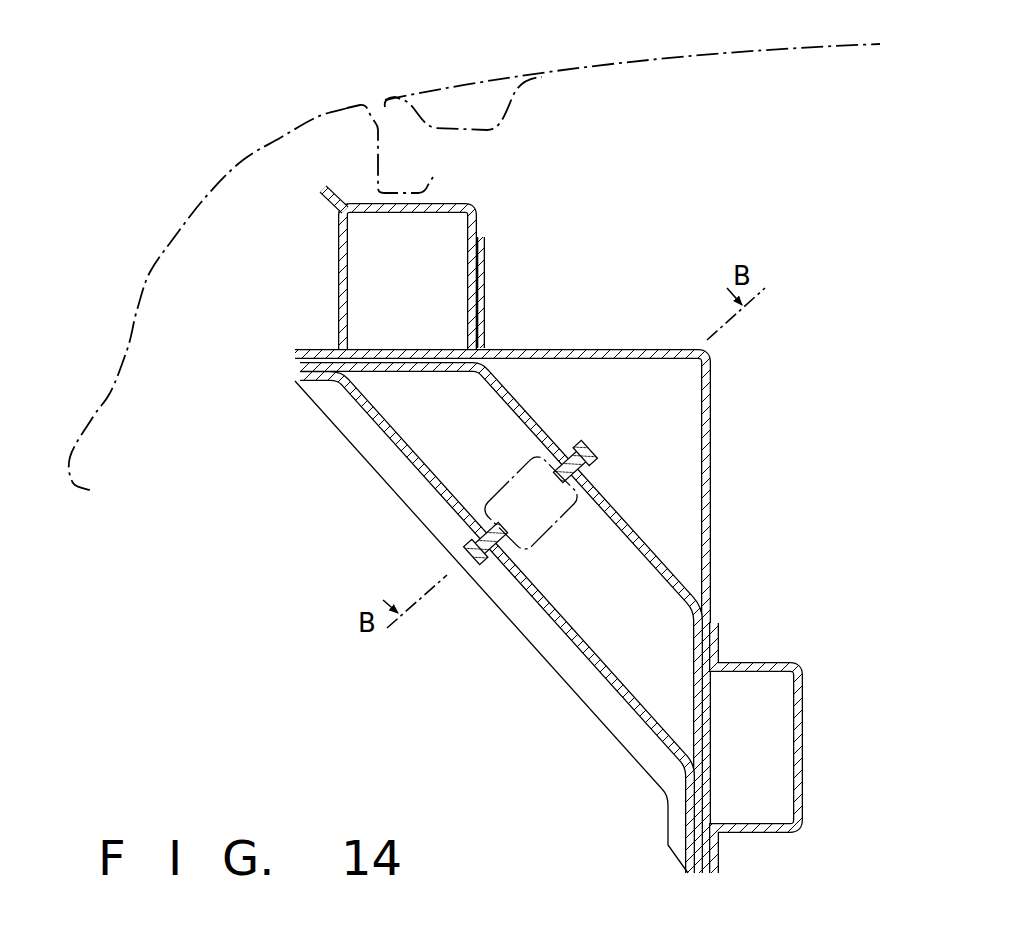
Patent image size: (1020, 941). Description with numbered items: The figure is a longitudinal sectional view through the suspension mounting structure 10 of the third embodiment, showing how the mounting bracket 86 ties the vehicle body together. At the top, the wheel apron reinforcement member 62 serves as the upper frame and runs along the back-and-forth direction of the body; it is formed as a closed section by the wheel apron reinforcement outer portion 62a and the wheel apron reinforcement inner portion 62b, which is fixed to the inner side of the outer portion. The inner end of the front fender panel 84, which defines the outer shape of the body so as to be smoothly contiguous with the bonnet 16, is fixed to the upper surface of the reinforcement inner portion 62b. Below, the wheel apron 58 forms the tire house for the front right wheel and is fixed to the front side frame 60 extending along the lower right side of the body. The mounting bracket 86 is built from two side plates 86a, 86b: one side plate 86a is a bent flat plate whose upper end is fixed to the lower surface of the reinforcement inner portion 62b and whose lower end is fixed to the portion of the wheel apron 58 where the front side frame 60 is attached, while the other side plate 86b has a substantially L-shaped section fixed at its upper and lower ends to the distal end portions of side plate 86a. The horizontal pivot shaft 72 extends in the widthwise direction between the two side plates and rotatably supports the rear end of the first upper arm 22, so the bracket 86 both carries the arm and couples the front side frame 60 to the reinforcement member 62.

The suspension mounting structure 10 is at (587, 730).
The bonnet 16 is at (657, 58).
The first upper arm 22 is at (488, 497).
The wheel apron 58 is at (712, 450).
The front side frame 60 is at (805, 754).
The wheel apron reinforcement member 62 is at (332, 196).
The wheel apron reinforcement outer portion 62a is at (338, 250).
The wheel apron reinforcement inner portion 62b is at (373, 206).
The pivot shaft 72 is at (593, 452).
The front fender panel 84 is at (150, 272).
The mounting bracket 86 is at (484, 620).
The side plate 86a is at (660, 573).
The side plate 86b is at (550, 618).